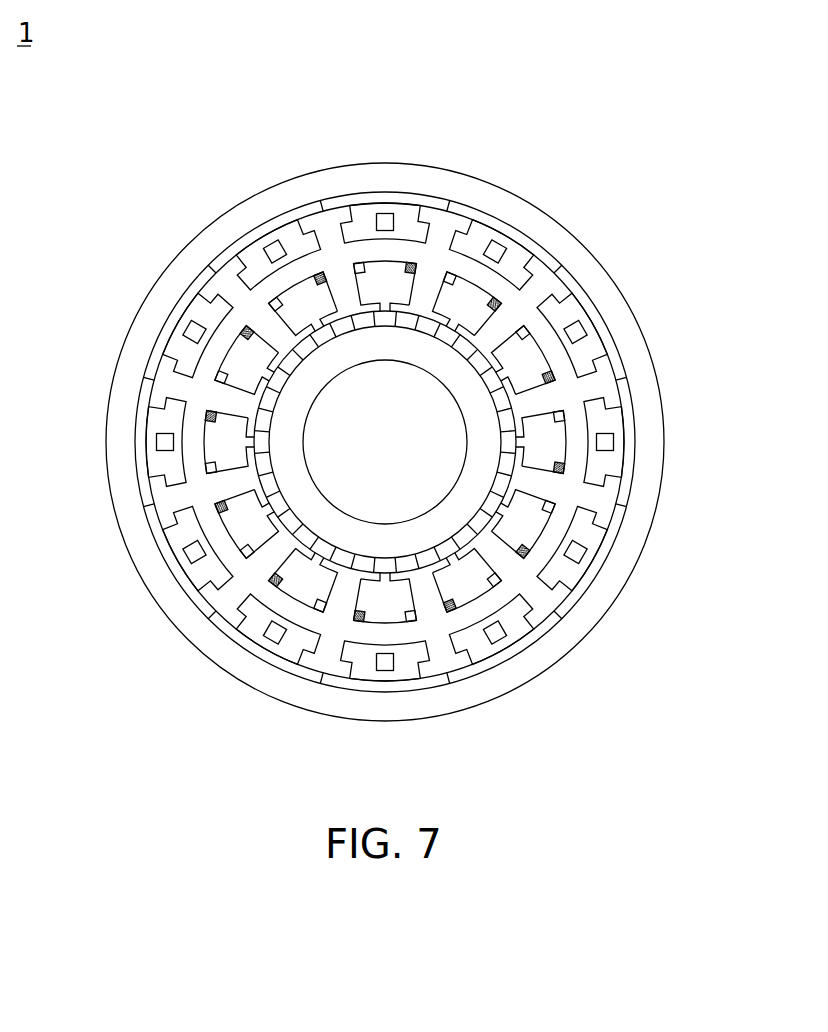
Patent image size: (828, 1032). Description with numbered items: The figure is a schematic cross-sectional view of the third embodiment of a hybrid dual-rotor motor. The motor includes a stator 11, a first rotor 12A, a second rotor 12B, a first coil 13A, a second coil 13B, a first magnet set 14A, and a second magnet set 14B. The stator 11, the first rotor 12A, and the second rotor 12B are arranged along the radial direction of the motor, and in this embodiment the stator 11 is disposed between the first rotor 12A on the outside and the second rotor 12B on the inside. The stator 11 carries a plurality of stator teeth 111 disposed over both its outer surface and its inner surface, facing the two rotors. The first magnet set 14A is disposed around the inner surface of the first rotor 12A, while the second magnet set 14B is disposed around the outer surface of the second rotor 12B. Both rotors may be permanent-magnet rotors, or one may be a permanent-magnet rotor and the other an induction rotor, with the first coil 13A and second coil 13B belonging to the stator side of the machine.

The stator 11 is at (555, 350).
The stator teeth 111 is at (500, 327).
The first rotor 12A is at (195, 260).
The second rotor 12B is at (400, 350).
The first coil 13A is at (185, 330).
The second coil 13B is at (203, 417).
The first magnet set 14A is at (262, 230).
The second magnet set 14B is at (355, 320).